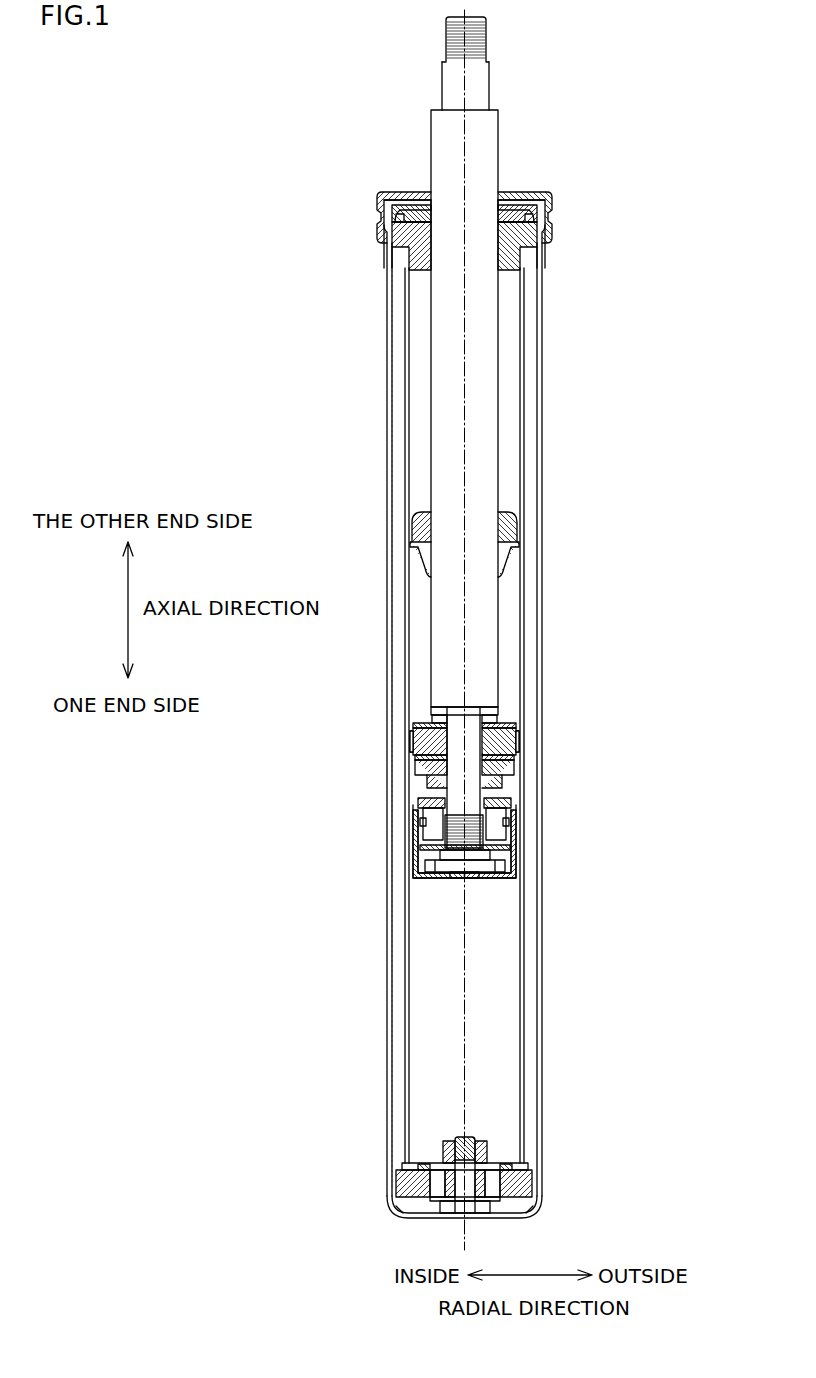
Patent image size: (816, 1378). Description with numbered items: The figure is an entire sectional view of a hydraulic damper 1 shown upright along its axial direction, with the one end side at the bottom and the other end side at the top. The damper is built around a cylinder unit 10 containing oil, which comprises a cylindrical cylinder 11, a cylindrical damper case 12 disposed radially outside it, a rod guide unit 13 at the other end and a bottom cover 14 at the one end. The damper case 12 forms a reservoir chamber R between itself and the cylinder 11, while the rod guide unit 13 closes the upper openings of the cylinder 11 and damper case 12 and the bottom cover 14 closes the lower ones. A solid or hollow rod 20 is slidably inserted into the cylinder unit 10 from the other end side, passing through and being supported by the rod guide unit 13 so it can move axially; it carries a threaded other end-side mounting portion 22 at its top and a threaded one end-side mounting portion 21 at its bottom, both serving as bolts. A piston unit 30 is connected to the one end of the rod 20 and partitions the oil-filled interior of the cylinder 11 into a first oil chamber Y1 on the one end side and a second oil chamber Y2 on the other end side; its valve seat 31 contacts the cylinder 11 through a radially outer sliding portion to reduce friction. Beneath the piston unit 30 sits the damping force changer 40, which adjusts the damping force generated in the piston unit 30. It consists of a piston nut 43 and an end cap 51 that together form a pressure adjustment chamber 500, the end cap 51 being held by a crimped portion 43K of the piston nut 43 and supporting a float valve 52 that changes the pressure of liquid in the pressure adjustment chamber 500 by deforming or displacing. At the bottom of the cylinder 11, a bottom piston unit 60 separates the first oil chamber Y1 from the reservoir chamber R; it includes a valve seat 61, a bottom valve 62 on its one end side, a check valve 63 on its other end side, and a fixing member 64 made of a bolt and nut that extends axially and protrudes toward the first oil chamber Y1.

The hydraulic damper 1 is at (246, 77).
The cylinder unit 10 is at (558, 190).
The cylinder 11 is at (524, 298).
The damper case 12 is at (541, 350).
The rod guide unit 13 is at (388, 192).
The bottom cover 14 is at (500, 1220).
The rod 20 is at (501, 141).
The one end-side mounting portion 21 is at (447, 787).
The other end-side mounting portion 22 is at (488, 37).
The piston unit 30 is at (512, 721).
The valve seat 31 is at (410, 745).
The damping force changer 40 is at (507, 887).
The piston nut 43 is at (507, 835).
The crimped portion 43K is at (513, 878).
The pressure adjustment chamber 500 is at (425, 846).
The end cap 51 is at (505, 862).
The float valve 52 is at (428, 853).
The bottom piston unit 60 is at (487, 1115).
The valve seat 61 is at (400, 1190).
The bottom valve 62 is at (435, 1201).
The check valve 63 is at (422, 1160).
The fixing member 64 is at (461, 1138).
The reservoir chamber R is at (398, 1005).
The first oil chamber Y1 is at (510, 981).
The second oil chamber Y2 is at (510, 437).